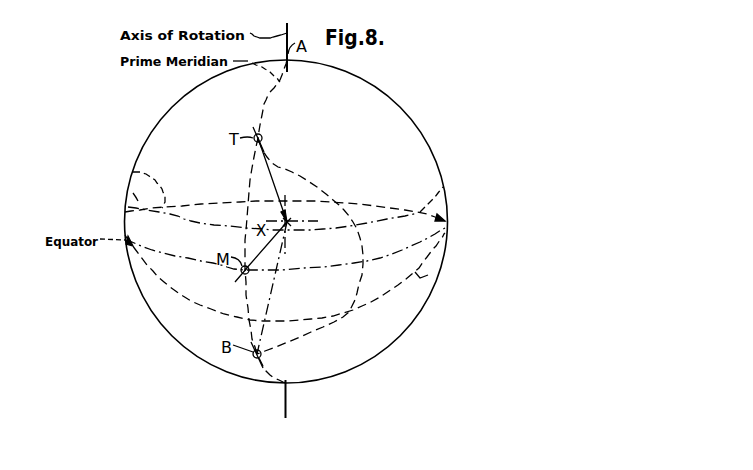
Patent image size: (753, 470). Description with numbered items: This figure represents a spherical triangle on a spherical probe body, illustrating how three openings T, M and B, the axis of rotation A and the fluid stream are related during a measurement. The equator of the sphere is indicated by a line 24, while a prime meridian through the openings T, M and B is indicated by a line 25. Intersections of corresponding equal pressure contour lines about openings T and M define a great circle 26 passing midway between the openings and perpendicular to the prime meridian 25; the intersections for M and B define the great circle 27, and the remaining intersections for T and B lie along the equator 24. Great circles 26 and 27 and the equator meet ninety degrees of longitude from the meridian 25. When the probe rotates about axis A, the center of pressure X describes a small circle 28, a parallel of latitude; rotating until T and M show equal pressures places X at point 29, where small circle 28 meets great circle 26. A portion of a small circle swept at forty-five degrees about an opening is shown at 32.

The equator line 24 is at (176, 254).
The prime meridian line 25 is at (270, 98).
The great circle of equal pressure for T and M 26 is at (134, 172).
The great circle of equal pressure for M and B 27 is at (436, 278).
The small circle 28 is at (129, 202).
The point of intersection 29 is at (420, 208).
The portion of small circle 32 is at (310, 182).